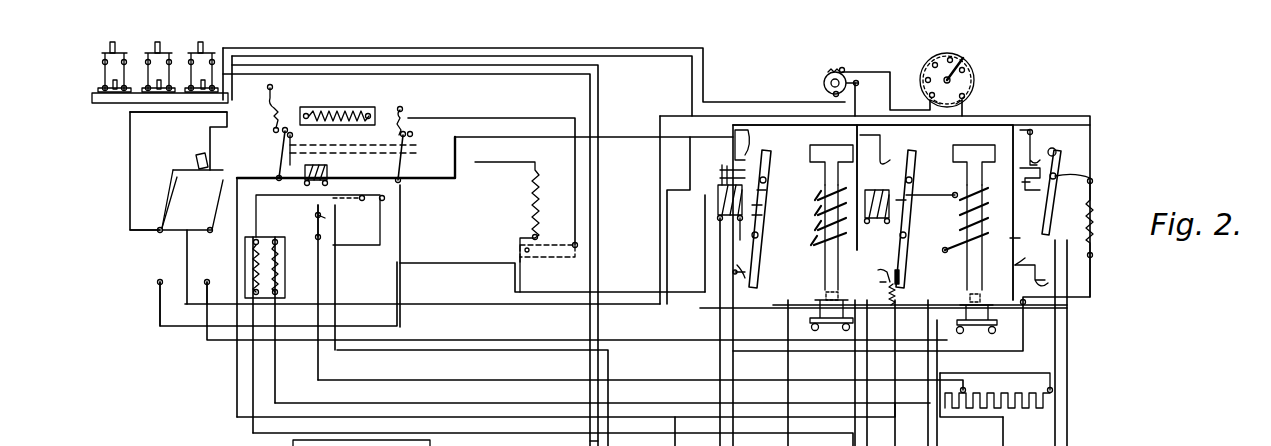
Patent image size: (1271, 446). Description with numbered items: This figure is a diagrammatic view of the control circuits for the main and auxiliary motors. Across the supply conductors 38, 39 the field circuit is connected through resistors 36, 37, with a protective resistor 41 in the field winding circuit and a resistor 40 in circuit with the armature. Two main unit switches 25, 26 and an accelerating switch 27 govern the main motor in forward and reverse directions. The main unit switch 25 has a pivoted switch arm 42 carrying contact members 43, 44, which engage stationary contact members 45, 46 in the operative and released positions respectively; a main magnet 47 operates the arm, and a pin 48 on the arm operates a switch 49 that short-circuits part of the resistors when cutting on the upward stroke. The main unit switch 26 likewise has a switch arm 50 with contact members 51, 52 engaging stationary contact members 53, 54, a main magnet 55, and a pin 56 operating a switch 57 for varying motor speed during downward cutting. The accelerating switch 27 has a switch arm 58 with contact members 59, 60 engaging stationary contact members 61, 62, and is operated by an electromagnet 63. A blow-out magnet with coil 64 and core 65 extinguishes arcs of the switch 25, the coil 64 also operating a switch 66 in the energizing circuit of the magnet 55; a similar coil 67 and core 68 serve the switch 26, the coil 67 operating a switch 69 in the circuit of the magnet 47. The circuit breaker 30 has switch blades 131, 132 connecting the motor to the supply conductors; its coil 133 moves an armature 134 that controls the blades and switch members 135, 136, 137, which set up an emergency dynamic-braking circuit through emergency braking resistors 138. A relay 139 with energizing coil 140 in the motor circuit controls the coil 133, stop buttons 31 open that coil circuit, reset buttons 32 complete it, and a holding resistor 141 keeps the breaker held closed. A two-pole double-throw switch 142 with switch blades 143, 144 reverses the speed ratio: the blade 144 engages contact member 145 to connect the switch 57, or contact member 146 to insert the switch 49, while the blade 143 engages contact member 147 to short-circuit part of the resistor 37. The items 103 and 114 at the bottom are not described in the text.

The main unit switch 25 is at (795, 187).
The main unit switch 26 is at (1051, 147).
The accelerating switch 27 is at (935, 212).
The circuit breaker 30 is at (190, 129).
The stop buttons 31 is at (164, 75).
The reset buttons 32 is at (163, 49).
The resistor 36 is at (976, 86).
The resistor 37 is at (826, 80).
The supply conductor 38 is at (402, 108).
The supply conductor 39 is at (266, 102).
The resistor 40 is at (984, 390).
The protective resistor 41 is at (1094, 222).
The switch arm 42 is at (758, 223).
The contact member 43 is at (772, 213).
The contact member 44 is at (745, 300).
The stationary contact member 45 is at (744, 147).
The stationary contact member 46 is at (746, 309).
The main magnet 47 is at (737, 224).
The pin 48 is at (766, 188).
The switch 49 is at (720, 172).
The switch arm 50 is at (1058, 192).
The contact member 51 is at (1056, 149).
The contact member 52 is at (1042, 270).
The stationary contact member 53 is at (1038, 142).
The stationary contact member 54 is at (1023, 262).
The main magnet 55 is at (1004, 236).
The pin 56 is at (1093, 177).
The switch 57 is at (1022, 180).
The switch arm 58 is at (908, 210).
The contact member 59 is at (910, 150).
The contact member 60 is at (905, 296).
The stationary contact member 61 is at (890, 158).
The stationary contact member 62 is at (884, 272).
The electromagnet 63 is at (877, 214).
The coil 64 is at (815, 230).
The core 65 is at (828, 150).
The switch 66 is at (815, 309).
The coil 67 is at (990, 224).
The core 68 is at (985, 147).
The switch 69 is at (962, 330).
The unit 103 is at (537, 439).
The unit 114 is at (361, 439).
The switch blade 131 is at (278, 162).
The switch blade 132 is at (404, 165).
The coil 133 is at (316, 152).
The armature 134 is at (340, 172).
The switch member 135 is at (312, 198).
The switch member 136 is at (314, 218).
The switch member 137 is at (370, 199).
The emergency braking resistors 138 is at (258, 283).
The relay 139 is at (549, 257).
The energizing coil 140 is at (535, 197).
The holding resistor 141 is at (338, 108).
The two-pole double-throw switch 142 is at (128, 221).
The switch blade 143 is at (176, 194).
The switch blade 144 is at (207, 214).
The contact member 145 is at (199, 165).
The contact member 146 is at (213, 272).
The contact member 147 is at (157, 281).